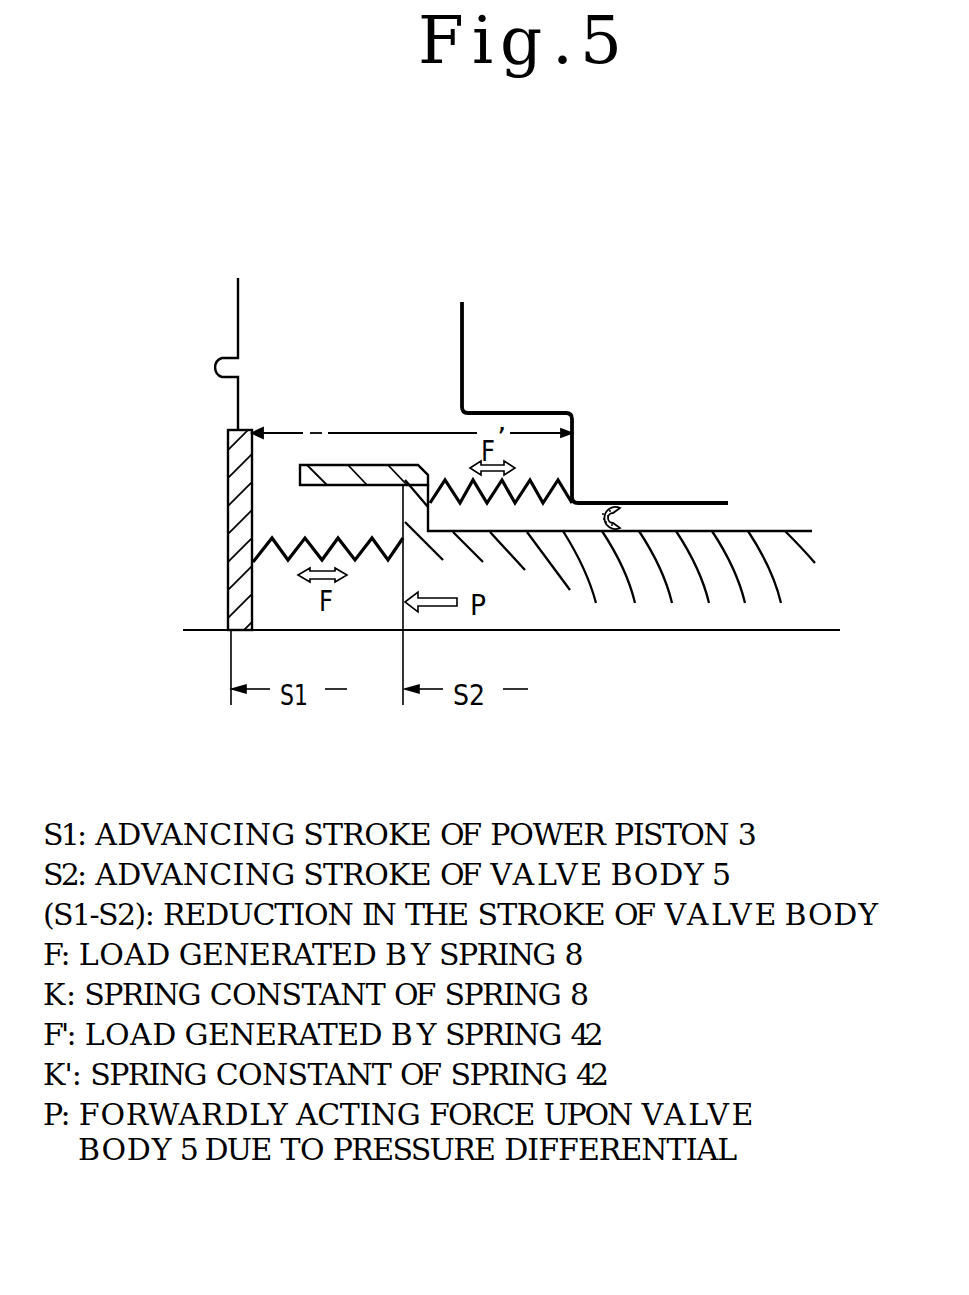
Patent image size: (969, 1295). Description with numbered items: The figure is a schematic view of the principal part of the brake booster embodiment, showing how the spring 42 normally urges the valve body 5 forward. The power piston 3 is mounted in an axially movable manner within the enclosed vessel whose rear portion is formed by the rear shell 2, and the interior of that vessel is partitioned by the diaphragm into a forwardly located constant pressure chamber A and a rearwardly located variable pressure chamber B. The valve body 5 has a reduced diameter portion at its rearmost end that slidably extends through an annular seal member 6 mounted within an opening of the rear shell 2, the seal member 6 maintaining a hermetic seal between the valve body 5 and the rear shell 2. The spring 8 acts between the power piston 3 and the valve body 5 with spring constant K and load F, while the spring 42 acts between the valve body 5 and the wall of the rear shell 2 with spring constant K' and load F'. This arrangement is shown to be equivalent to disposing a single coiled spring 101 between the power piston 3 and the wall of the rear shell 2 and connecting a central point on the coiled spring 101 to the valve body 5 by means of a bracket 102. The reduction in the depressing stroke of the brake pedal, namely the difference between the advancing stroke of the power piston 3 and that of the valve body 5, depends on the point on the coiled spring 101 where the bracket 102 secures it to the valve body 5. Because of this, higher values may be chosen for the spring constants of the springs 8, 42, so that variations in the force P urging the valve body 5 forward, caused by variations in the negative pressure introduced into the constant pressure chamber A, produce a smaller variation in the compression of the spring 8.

The rear shell 2 is at (595, 402).
The power piston 3 is at (237, 513).
The valve body 5 is at (725, 550).
The annular seal member 6 is at (609, 507).
The spring 8 is at (318, 543).
The spring 42 is at (487, 497).
The coiled spring 101 is at (350, 432).
The bracket 102 is at (412, 465).
The constant pressure chamber A is at (177, 343).
The variable pressure chamber B is at (358, 338).